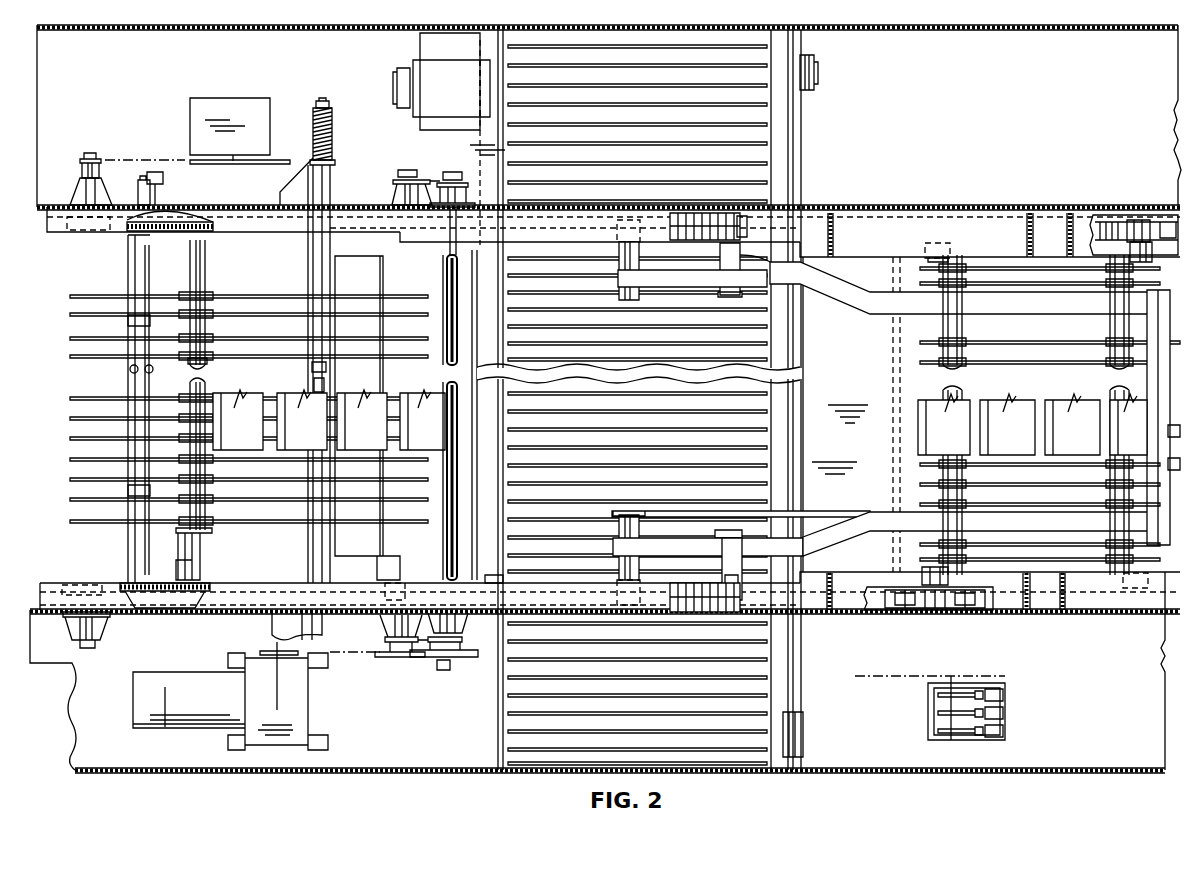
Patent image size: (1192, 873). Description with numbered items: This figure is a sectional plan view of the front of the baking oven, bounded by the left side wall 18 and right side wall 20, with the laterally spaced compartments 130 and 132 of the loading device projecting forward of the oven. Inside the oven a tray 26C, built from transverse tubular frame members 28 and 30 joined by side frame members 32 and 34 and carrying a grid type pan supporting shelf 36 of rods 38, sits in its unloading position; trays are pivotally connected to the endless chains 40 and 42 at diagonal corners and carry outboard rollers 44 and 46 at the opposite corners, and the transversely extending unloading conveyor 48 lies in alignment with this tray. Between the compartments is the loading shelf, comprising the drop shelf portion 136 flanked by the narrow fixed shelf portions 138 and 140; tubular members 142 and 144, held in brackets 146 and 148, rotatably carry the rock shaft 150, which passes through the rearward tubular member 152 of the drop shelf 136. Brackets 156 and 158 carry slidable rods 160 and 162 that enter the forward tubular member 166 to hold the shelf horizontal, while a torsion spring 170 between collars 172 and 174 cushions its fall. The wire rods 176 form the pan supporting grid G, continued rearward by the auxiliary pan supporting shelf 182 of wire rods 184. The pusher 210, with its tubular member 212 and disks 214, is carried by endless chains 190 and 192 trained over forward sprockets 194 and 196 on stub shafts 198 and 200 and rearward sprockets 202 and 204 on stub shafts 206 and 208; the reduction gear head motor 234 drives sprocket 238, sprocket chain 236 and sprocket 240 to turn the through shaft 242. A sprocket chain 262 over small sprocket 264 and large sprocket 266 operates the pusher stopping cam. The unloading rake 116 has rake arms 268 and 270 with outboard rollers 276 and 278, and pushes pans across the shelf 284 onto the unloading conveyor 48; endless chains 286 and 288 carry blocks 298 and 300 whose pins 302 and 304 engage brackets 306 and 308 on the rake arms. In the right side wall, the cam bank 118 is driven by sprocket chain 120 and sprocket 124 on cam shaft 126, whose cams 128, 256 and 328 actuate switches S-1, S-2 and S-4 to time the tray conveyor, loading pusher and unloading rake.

The side wall 18 is at (870, 205).
The side wall 20 is at (875, 617).
The tray 26C is at (920, 341).
The tubular frame member 28 is at (935, 351).
The tubular frame member 30 is at (1110, 370).
The side frame member 32 is at (1043, 265).
The side frame member 34 is at (1043, 573).
The pan supporting shelf 36 is at (985, 368).
The rods 38 is at (1015, 341).
The endless chain 40 is at (1118, 215).
The endless chain 42 is at (950, 615).
The outboard roller 44 is at (940, 242).
The outboard roller 46 is at (1135, 590).
The unloading conveyor 48 is at (760, 652).
The unloading rake 116 is at (874, 510).
The cam bank 118 is at (986, 741).
The sprocket chain 120 is at (862, 677).
The sprocket 124 is at (982, 673).
The cam shaft 126 is at (950, 736).
The cam 128 is at (938, 695).
The compartment 130 is at (178, 25).
The compartment 132 is at (220, 772).
The drop shelf portion 136 is at (70, 418).
The fixed pan supporting shelf portion 138 is at (72, 296).
The fixed pan supporting shelf portion 140 is at (70, 519).
The tubular member 142 is at (310, 252).
The tubular member 144 is at (310, 572).
The bracket 146 is at (283, 179).
The bracket 148 is at (275, 620).
The rock shaft 150 is at (322, 101).
The rearward tubular member 152 is at (310, 388).
The bracket 156 is at (130, 243).
The bracket 158 is at (128, 540).
The rod 160 is at (72, 320).
The rod 162 is at (130, 490).
The forward tubular member 166 is at (130, 378).
The torsion spring 170 is at (333, 128).
The collar 172 is at (332, 106).
The collar 174 is at (333, 162).
The wire rods 176 is at (240, 521).
The auxiliary pan supporting shelf 182 is at (358, 297).
The wire rods 184 is at (338, 521).
The endless chain 190 is at (170, 222).
The endless chain 192 is at (180, 596).
The sprocket 194 is at (47, 231).
The sprocket 196 is at (60, 588).
The stub shaft 198 is at (100, 180).
The stub shaft 200 is at (88, 642).
The sprocket 202 is at (392, 225).
The sprocket 204 is at (392, 598).
The stub shaft 206 is at (405, 172).
The stub shaft 208 is at (410, 658).
The pusher 210 is at (210, 534).
The tubular member 212 is at (207, 382).
The disks 214 is at (186, 350).
The reduction gear head motor 234 is at (212, 730).
The sprocket chain 236 is at (358, 657).
The sprocket 238 is at (270, 660).
The sprocket 240 is at (452, 662).
The through shaft 242 is at (443, 560).
The cam 256 is at (938, 713).
The sprocket chain 262 is at (152, 160).
The small sprocket 264 is at (85, 156).
The large sprocket 266 is at (282, 160).
The rake arm 268 is at (836, 281).
The rake arm 270 is at (848, 548).
The outboard roller 276 is at (616, 228).
The outboard roller 278 is at (614, 590).
The shelf 284 is at (864, 449).
The endless chain 286 is at (700, 243).
The endless chain 288 is at (680, 583).
The block 298 is at (758, 270).
The block 300 is at (740, 568).
The pin 302 is at (728, 296).
The pin 304 is at (722, 530).
The bracket 306 is at (718, 278).
The bracket 308 is at (720, 545).
The cam 328 is at (938, 731).
The pan supporting grid G is at (235, 295).
The switch S-1 is at (1003, 695).
The switch S-2 is at (1003, 713).
The switch S-4 is at (1003, 731).